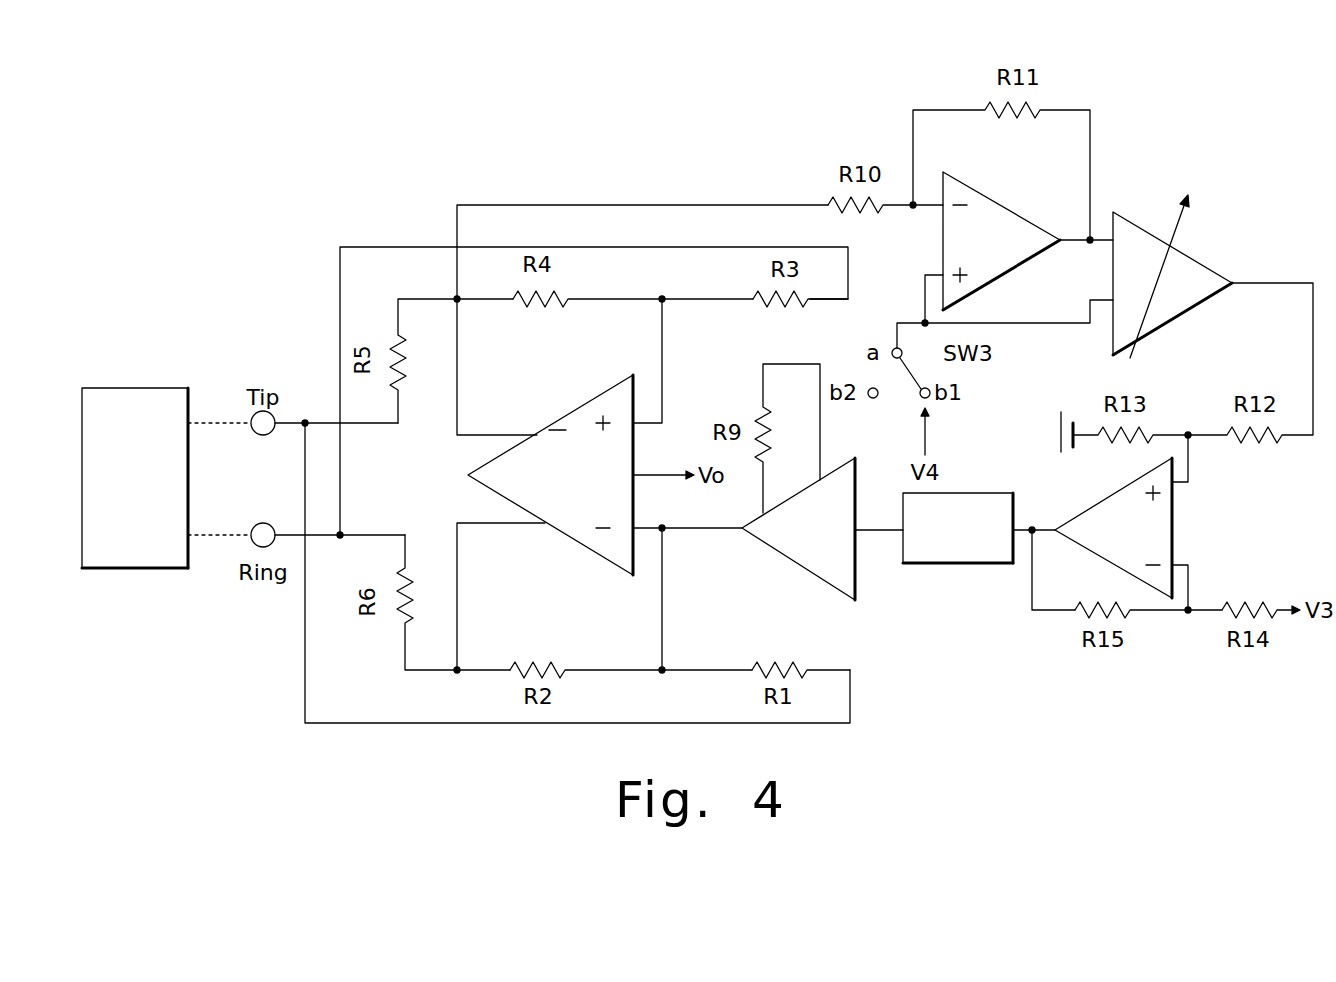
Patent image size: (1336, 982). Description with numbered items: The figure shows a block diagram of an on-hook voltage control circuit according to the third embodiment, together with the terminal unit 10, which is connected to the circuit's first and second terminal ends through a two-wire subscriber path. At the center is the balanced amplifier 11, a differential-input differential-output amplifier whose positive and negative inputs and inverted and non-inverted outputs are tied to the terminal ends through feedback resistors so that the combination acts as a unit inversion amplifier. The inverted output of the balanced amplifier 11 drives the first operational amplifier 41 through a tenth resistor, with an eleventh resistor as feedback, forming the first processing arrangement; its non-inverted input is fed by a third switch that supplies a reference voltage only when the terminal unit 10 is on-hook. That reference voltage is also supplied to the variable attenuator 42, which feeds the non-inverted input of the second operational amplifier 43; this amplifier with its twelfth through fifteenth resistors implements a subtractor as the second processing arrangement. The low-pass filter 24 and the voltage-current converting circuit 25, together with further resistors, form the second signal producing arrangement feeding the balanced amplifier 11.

The terminal unit 10 is at (143, 388).
The balanced amplifier 11 is at (557, 422).
The low-pass filter 24 is at (962, 565).
The voltage-current converting circuit 25 is at (778, 552).
The first operational amplifier 41 is at (1015, 213).
The variable attenuator 42 is at (1200, 310).
The second operational amplifier 43 is at (1175, 528).